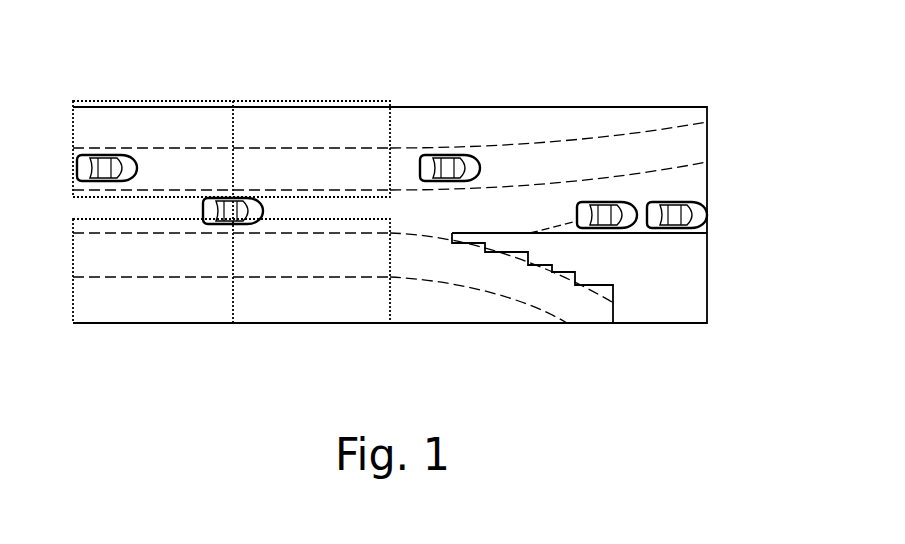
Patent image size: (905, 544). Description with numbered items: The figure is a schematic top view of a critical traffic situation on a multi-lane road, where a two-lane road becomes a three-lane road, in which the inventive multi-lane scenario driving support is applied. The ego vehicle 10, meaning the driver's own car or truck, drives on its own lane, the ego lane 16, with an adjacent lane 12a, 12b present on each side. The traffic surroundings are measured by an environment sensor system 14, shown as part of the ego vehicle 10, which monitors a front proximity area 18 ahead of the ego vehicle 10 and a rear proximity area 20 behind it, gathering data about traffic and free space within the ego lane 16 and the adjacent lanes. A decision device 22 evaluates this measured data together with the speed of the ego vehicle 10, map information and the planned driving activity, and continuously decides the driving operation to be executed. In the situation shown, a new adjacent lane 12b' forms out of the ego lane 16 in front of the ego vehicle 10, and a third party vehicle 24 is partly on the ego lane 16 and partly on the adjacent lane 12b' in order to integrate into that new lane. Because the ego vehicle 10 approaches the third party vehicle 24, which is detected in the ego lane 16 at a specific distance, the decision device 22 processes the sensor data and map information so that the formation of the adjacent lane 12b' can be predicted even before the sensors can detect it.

The ego vehicle 10 is at (192, 311).
The adjacent lane 12a is at (308, 168).
The adjacent lane 12b is at (342, 322).
The adjacent lane 12b' is at (626, 262).
The environment sensor system 14 is at (232, 217).
The ego lane 16 is at (349, 211).
The front proximity area 18 is at (382, 137).
The rear proximity area 20 is at (138, 127).
The decision device 22 is at (222, 223).
The third party vehicle 24 is at (605, 213).